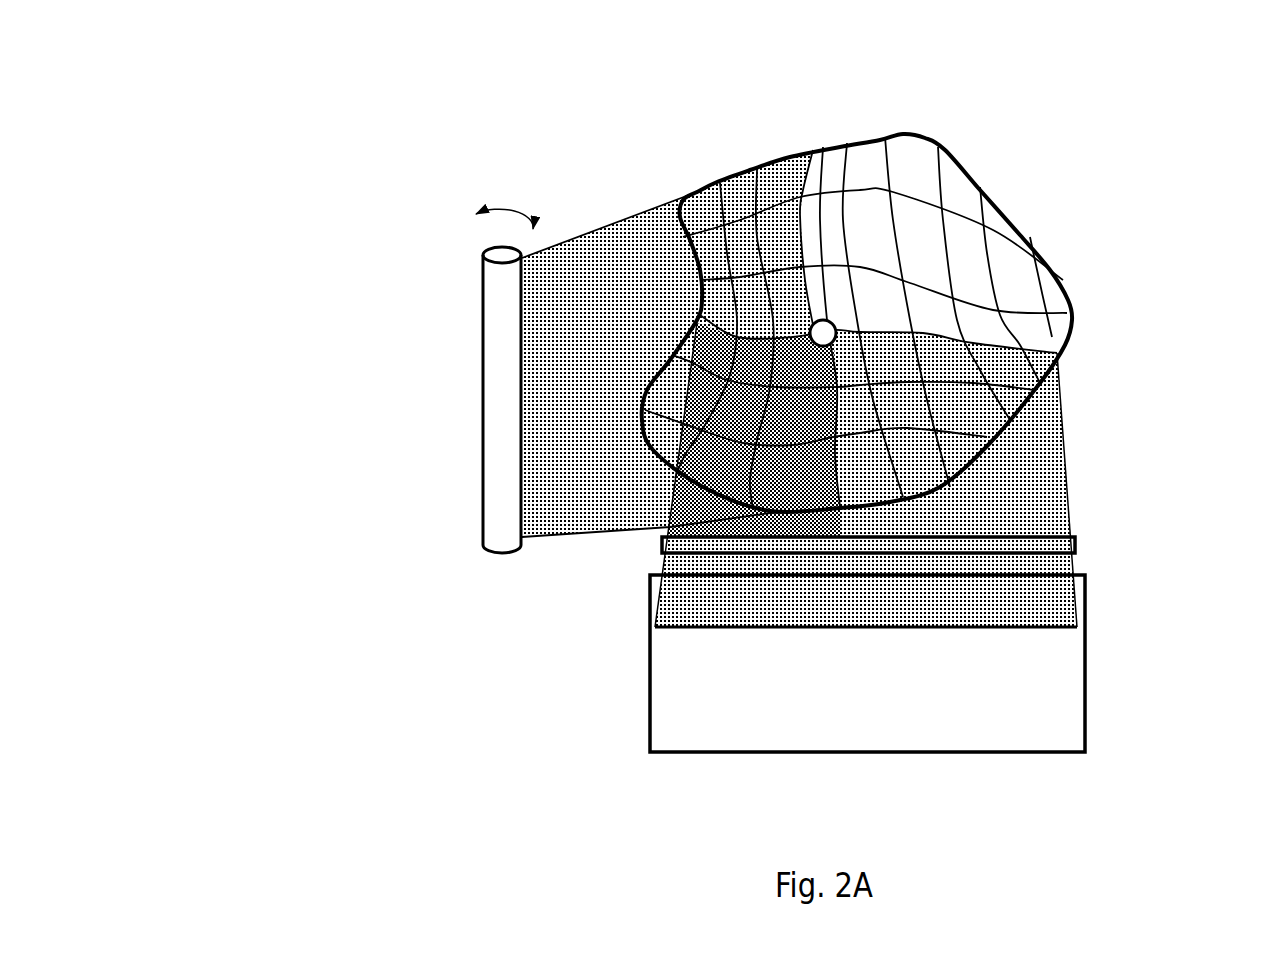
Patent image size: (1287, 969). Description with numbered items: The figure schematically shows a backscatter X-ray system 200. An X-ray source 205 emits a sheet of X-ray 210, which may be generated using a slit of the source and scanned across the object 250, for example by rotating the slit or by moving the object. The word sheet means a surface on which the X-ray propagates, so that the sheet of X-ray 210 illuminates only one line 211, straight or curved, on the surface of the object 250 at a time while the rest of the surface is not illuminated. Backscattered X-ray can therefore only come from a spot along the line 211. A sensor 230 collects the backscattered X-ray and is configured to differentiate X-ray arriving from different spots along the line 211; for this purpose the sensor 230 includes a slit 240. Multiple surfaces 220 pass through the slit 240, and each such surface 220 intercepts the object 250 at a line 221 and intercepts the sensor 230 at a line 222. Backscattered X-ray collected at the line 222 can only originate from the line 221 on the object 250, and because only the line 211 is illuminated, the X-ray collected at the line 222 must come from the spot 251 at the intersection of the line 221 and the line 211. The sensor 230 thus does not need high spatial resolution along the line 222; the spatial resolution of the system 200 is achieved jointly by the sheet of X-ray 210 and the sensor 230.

The backscatter X-ray system 200 is at (338, 137).
The X-ray source 205 is at (478, 368).
The sheet of X-ray 210 is at (603, 214).
The line 211 is at (798, 182).
The surface 220 is at (1073, 465).
The line 221 is at (1034, 349).
The line 222 is at (688, 628).
The sensor 230 is at (1086, 673).
The slit 240 is at (1080, 545).
The object 250 is at (1174, 176).
The spot 251 is at (826, 317).